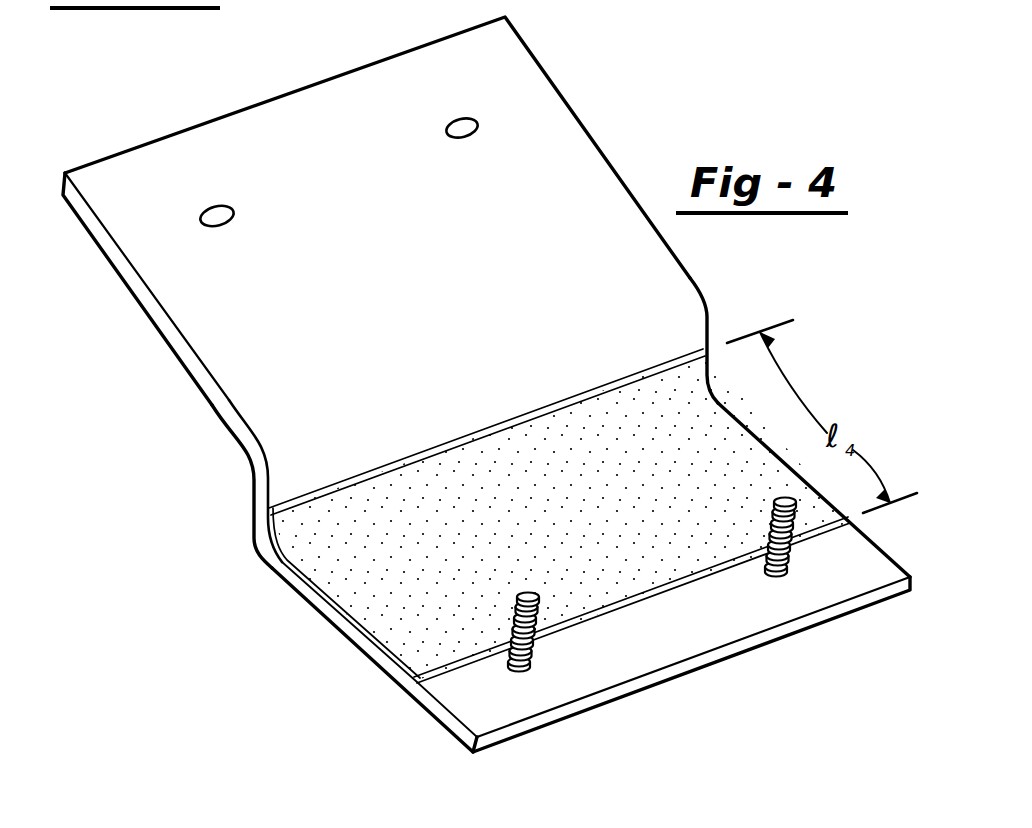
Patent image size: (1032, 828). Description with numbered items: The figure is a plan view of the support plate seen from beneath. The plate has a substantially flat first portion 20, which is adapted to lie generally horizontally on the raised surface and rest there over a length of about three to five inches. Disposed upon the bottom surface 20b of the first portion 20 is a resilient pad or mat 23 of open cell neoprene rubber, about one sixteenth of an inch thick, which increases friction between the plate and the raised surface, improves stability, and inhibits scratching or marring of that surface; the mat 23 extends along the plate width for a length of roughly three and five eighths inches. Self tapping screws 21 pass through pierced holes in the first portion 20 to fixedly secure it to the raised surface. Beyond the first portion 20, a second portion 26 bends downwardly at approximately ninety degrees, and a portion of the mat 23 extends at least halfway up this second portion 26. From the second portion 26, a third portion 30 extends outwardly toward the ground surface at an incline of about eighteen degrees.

The third portion 30 is at (622, 152).
The second portion 26 is at (244, 516).
The first portion 20 is at (377, 676).
The bottom surface 20b is at (889, 568).
The resilient pad or mat 23 is at (337, 592).
The self tapping screw 21 is at (770, 566).